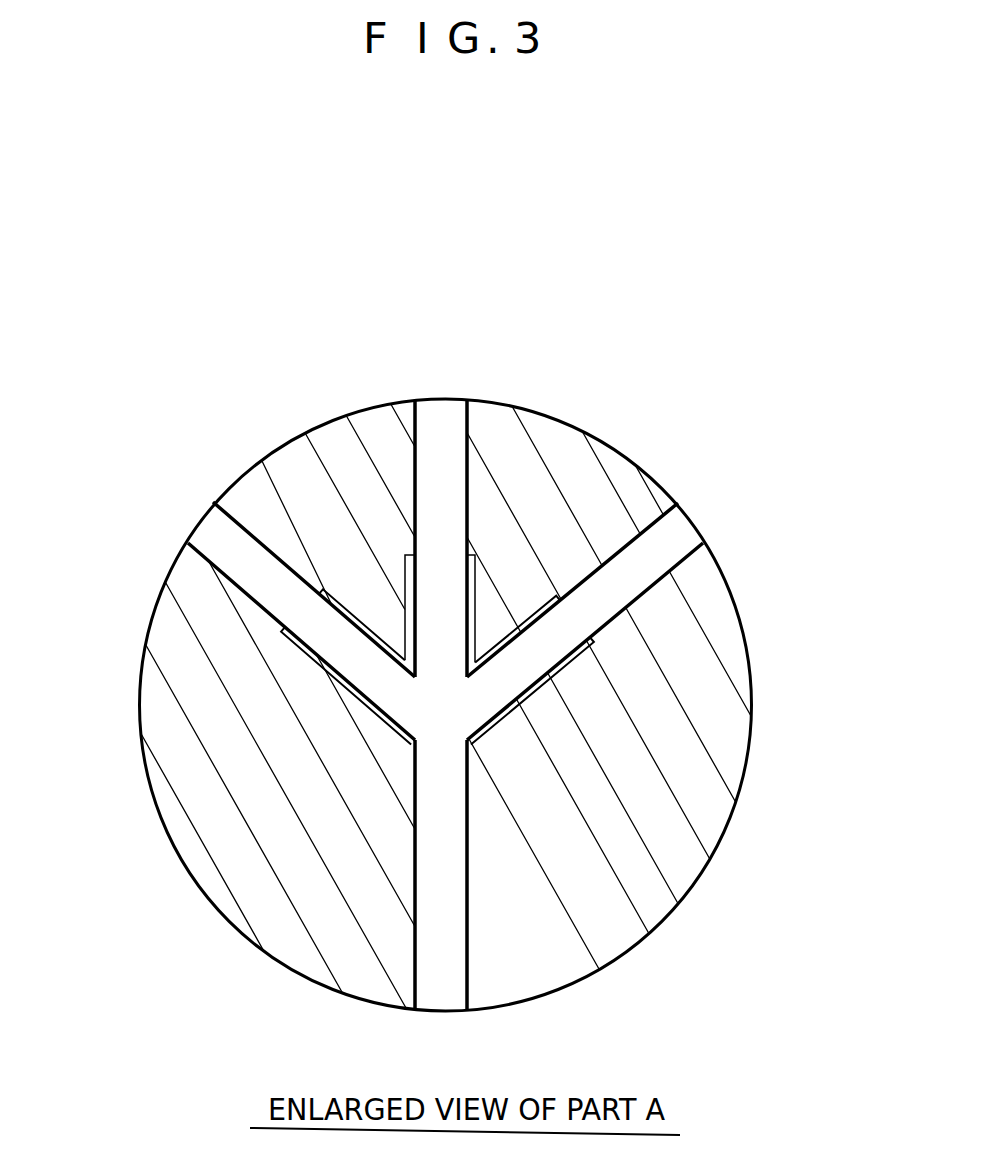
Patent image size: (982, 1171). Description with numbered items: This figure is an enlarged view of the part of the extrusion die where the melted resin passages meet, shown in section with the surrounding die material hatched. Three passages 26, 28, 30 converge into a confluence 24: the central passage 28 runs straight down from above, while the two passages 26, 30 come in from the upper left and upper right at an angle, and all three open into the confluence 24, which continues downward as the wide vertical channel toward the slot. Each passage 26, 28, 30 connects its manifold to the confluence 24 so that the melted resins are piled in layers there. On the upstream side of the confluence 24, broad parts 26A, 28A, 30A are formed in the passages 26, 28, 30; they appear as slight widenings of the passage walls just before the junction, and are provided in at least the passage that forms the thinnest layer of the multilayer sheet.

The confluence 24 is at (450, 703).
The passage 26 is at (230, 545).
The broad part 26A is at (348, 612).
The passage 28 is at (440, 425).
The broad part 28A is at (403, 575).
The passage 30 is at (627, 573).
The broad part 30A is at (532, 612).